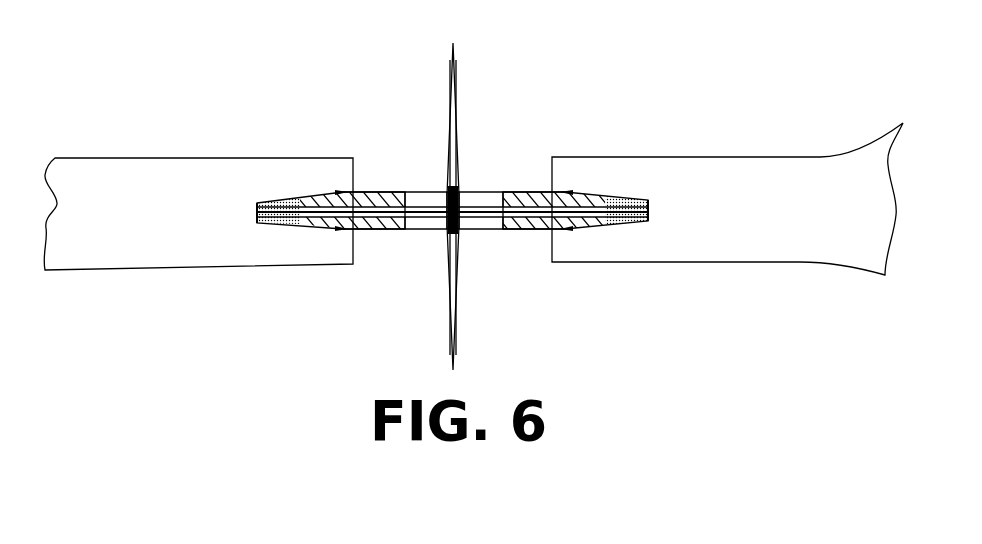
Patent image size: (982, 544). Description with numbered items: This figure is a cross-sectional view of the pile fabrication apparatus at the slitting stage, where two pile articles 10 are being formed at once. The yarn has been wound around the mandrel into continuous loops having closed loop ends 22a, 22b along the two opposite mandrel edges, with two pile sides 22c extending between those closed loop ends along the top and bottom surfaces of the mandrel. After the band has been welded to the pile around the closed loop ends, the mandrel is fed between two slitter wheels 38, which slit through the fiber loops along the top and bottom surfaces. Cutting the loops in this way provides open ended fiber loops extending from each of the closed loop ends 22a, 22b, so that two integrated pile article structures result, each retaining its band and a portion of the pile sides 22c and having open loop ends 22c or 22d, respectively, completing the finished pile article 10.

The pile article 10 is at (538, 228).
The closed loop end 22a is at (291, 228).
The closed loop end 22b is at (607, 228).
The pile side 22c is at (447, 192).
The open loop end 22d is at (460, 192).
The slitter wheel 38 is at (447, 90).